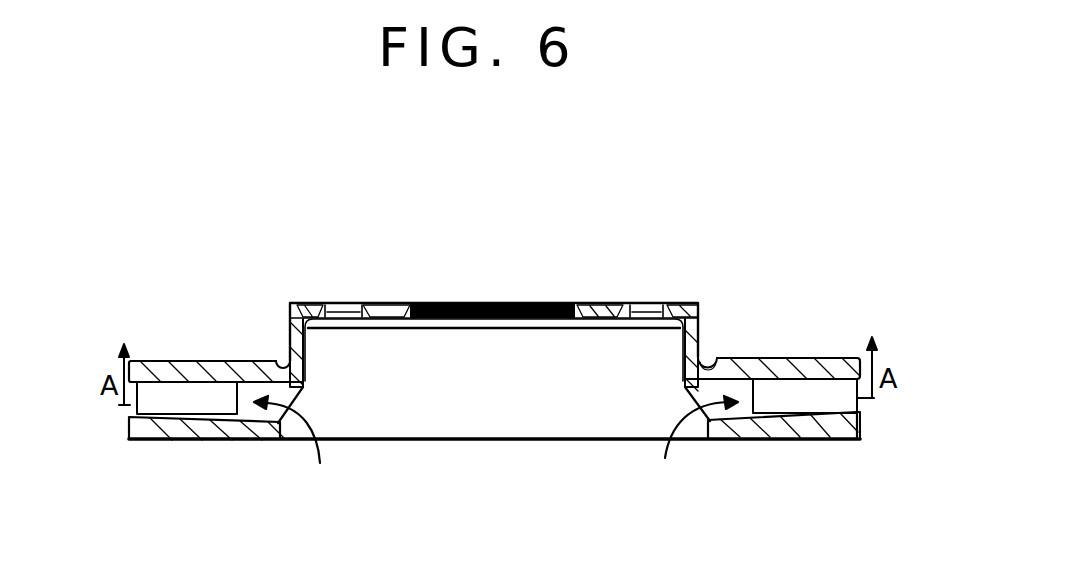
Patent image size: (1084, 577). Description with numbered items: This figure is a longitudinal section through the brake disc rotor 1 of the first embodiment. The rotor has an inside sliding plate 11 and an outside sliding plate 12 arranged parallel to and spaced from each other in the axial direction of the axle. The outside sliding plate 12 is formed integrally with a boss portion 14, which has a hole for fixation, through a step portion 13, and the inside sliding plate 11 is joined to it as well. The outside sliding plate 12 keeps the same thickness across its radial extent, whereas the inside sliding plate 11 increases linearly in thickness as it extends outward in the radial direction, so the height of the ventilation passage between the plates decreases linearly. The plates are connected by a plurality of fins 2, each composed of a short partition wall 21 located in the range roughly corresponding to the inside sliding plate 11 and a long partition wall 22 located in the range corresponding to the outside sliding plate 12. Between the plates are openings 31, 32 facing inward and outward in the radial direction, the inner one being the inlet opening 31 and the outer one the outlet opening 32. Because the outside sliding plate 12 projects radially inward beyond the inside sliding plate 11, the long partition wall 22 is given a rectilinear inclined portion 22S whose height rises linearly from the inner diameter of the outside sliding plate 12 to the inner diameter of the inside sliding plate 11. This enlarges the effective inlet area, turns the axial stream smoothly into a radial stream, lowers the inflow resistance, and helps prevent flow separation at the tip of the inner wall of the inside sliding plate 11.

The brake disc rotor 1 is at (757, 254).
The fin 2 is at (497, 410).
The inside sliding plate 11 is at (793, 437).
The outside sliding plate 12 is at (793, 370).
The step portion 13 is at (292, 338).
The boss portion 14 is at (383, 307).
The short partition wall 21 is at (183, 405).
The long partition wall 22 is at (250, 402).
The rectilinear inclined portion 22S is at (720, 391).
The inlet opening 31 is at (727, 360).
The outlet opening 32 is at (862, 398).